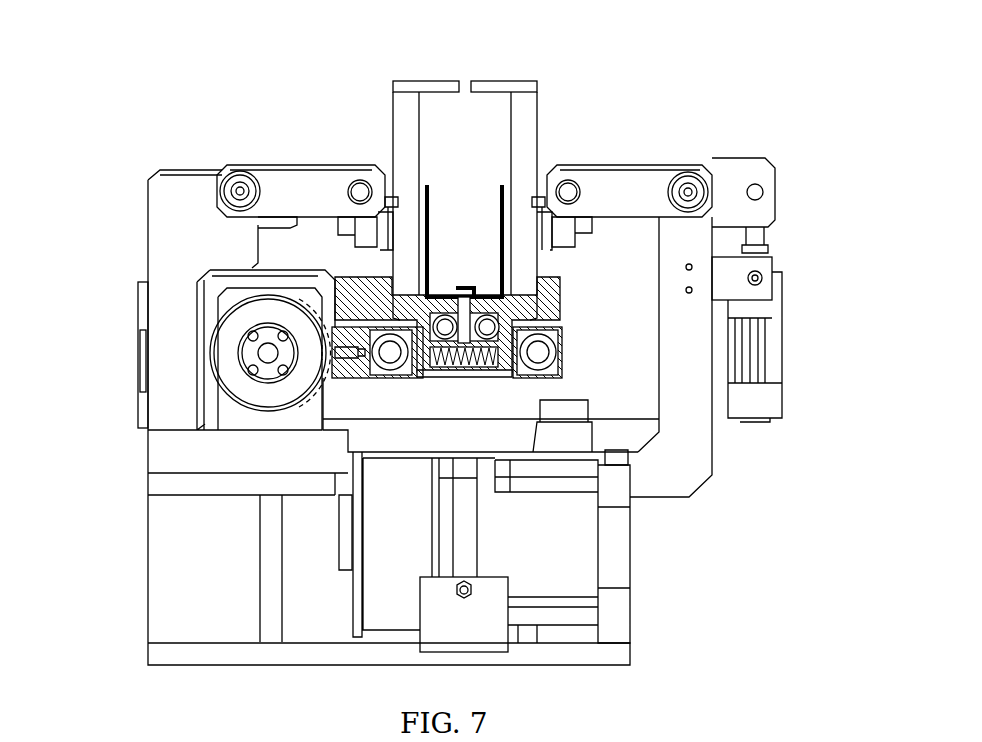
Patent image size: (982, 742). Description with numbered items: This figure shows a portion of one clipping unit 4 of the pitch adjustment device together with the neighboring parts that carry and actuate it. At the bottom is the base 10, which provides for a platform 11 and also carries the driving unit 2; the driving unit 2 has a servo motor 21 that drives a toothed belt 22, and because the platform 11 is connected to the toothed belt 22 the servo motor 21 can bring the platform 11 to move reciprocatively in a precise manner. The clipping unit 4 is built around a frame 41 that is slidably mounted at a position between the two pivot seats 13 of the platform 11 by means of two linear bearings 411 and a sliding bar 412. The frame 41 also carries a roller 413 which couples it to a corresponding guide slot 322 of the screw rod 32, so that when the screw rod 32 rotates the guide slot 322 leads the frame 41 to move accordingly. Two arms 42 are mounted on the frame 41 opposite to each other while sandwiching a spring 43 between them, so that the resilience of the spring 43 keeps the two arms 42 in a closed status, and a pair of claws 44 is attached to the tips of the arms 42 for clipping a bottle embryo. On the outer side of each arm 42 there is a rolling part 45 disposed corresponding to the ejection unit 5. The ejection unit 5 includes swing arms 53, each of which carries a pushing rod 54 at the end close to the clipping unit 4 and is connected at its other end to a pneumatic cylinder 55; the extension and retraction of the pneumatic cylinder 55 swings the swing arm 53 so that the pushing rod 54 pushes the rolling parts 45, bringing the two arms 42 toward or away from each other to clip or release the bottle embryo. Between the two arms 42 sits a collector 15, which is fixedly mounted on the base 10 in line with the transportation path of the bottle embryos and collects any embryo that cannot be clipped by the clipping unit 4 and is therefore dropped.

The driving unit 2 is at (350, 597).
The clipping unit 4 is at (470, 175).
The ejection unit 5 is at (170, 165).
The base 10 is at (155, 655).
The platform 11 is at (500, 398).
The pivot seat 13 is at (340, 305).
The collector 15 is at (430, 228).
The servo motor 21 is at (568, 540).
The toothed belt 22 is at (385, 605).
The screw rod 32 is at (242, 325).
The guide slot 322 is at (330, 392).
The frame 41 is at (485, 355).
The linear bearing 411 is at (375, 380).
The sliding bar 412 is at (405, 370).
The roller 413 is at (312, 300).
The arm 42 is at (393, 112).
The spring 43 is at (465, 370).
The claw 44 is at (442, 84).
The rolling part 45 is at (366, 243).
The swing arm 53 is at (300, 182).
The pushing rod 54 is at (357, 184).
The pneumatic cylinder 55 is at (142, 318).